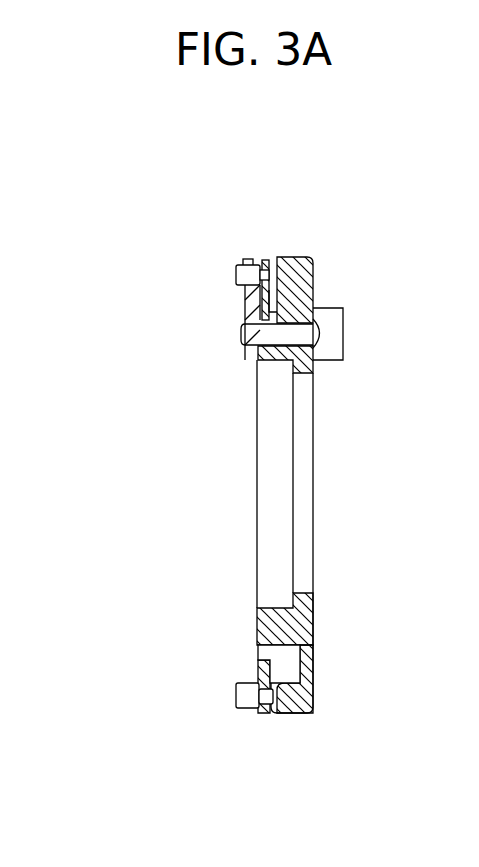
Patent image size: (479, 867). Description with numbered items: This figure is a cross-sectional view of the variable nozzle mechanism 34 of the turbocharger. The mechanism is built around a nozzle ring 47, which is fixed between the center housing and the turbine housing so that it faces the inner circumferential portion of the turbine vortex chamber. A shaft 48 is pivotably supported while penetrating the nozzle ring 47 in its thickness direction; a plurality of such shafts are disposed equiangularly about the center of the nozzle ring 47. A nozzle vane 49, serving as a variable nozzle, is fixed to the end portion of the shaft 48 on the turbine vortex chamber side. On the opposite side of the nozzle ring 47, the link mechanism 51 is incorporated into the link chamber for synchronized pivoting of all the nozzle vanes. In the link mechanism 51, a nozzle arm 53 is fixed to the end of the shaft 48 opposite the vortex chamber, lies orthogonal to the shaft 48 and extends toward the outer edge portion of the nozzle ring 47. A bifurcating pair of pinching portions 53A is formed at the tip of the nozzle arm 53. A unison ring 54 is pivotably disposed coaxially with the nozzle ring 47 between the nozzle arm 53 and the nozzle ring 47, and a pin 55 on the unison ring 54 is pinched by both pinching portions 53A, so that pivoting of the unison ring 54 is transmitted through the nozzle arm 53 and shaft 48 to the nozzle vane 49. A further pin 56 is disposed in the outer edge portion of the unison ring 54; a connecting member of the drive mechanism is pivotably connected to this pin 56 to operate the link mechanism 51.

The variable nozzle mechanism 34 is at (224, 192).
The nozzle ring 47 is at (290, 256).
The shaft 48 is at (242, 333).
The nozzle vane 49 is at (343, 328).
The link mechanism 51 is at (205, 669).
The nozzle arm 53 is at (245, 303).
The pinching portions 53A is at (252, 258).
The unison ring 54 is at (265, 258).
The pin 55 is at (236, 273).
The pin 56 is at (246, 708).